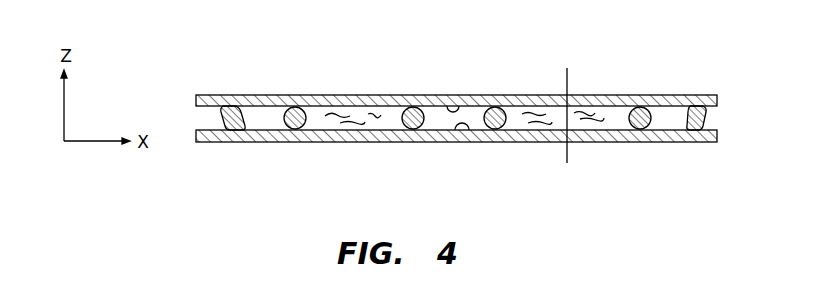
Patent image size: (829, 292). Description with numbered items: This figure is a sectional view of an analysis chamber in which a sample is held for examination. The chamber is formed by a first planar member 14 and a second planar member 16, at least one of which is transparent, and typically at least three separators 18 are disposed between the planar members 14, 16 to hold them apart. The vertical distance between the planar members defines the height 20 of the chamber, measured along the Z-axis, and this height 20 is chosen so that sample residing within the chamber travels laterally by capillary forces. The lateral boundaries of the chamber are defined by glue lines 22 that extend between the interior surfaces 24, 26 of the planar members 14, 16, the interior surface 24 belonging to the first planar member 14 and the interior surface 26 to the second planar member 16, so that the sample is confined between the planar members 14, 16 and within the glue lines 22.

The first planar member 14 is at (362, 95).
The second planar member 16 is at (335, 143).
The separators 18 is at (296, 107).
The height of the chamber 20 is at (568, 80).
The glue lines 22 is at (233, 95).
The interior surface of the first planar member 24 is at (455, 106).
The interior surface of the second planar member 26 is at (462, 143).